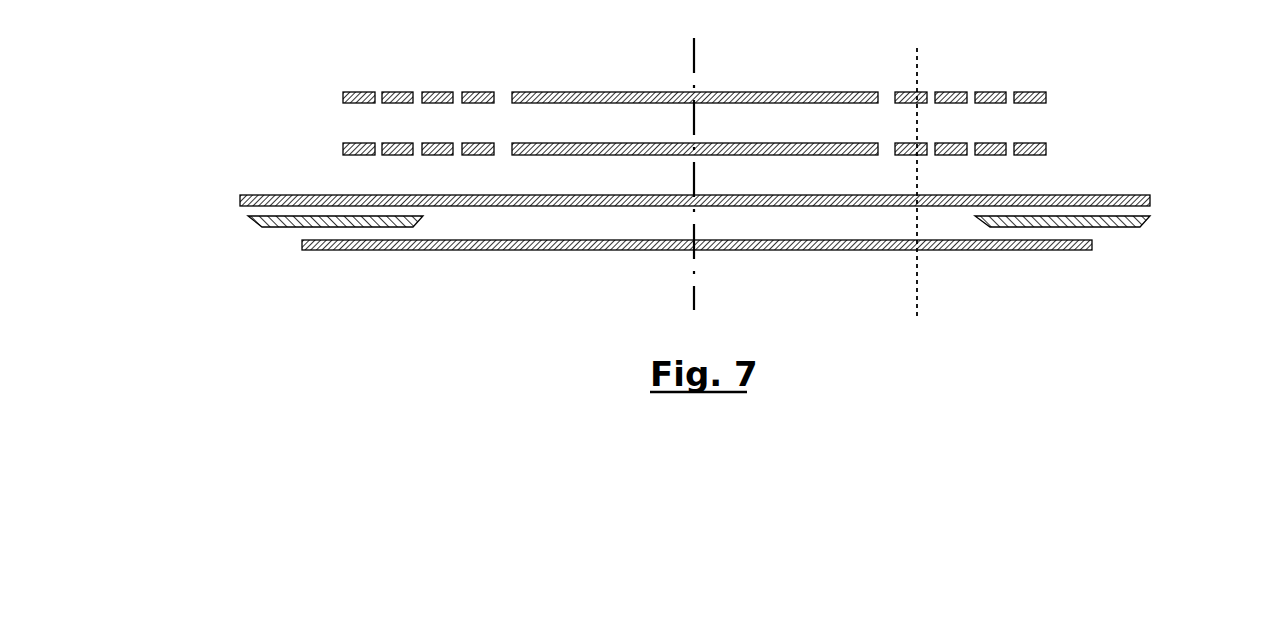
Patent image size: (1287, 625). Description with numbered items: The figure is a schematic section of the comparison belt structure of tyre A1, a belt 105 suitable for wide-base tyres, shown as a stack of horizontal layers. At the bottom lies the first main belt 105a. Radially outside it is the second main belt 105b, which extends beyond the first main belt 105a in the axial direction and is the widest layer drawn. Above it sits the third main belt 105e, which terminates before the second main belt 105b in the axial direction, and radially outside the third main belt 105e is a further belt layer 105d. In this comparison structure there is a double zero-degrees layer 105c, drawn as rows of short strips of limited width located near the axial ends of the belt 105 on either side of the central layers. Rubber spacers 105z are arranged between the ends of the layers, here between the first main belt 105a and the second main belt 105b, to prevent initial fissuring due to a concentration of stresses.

The belt 105 is at (395, 291).
The first main belt 105a is at (300, 254).
The second main belt 105b is at (240, 195).
The zero-degrees reinforcing layer 105c is at (342, 143).
The further belt layer 105d is at (530, 92).
The third main belt 105e is at (738, 143).
The rubber spacer 105z is at (253, 221).